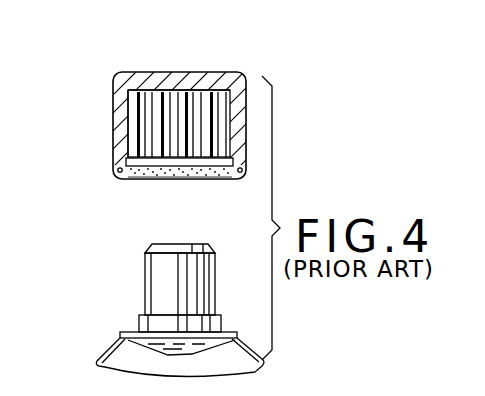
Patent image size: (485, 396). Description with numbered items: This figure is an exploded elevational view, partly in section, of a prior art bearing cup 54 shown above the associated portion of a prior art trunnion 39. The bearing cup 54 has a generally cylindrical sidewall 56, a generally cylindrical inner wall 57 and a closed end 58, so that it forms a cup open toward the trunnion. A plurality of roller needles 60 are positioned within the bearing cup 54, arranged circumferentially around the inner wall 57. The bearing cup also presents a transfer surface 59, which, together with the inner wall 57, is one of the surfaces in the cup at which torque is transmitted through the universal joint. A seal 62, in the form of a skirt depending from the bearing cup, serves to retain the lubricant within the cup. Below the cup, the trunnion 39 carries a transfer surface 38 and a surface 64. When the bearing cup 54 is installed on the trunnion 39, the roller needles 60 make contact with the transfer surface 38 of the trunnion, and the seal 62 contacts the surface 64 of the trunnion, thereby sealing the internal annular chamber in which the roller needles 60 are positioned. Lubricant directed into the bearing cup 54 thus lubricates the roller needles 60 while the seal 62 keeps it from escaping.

The bearing cup 54 is at (181, 125).
The sidewall 56 is at (113, 116).
The inner wall 57 is at (140, 91).
The closed end 58 is at (183, 84).
The transfer surface 59 is at (113, 128).
The roller needles 60 is at (134, 137).
The seal 62 is at (137, 180).
The transfer surface 38 is at (164, 288).
The trunnion 39 is at (218, 296).
The surface 64 is at (131, 331).